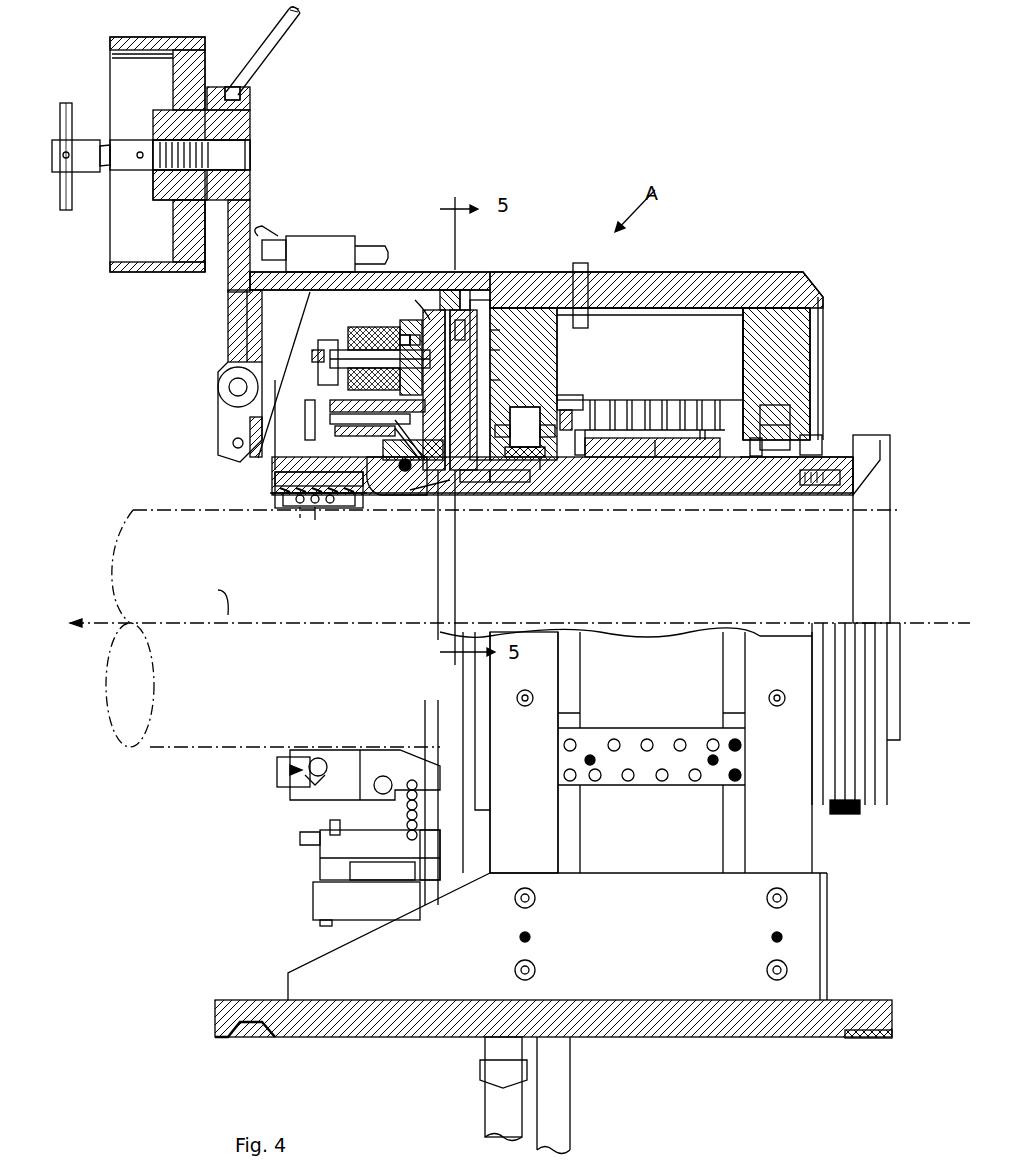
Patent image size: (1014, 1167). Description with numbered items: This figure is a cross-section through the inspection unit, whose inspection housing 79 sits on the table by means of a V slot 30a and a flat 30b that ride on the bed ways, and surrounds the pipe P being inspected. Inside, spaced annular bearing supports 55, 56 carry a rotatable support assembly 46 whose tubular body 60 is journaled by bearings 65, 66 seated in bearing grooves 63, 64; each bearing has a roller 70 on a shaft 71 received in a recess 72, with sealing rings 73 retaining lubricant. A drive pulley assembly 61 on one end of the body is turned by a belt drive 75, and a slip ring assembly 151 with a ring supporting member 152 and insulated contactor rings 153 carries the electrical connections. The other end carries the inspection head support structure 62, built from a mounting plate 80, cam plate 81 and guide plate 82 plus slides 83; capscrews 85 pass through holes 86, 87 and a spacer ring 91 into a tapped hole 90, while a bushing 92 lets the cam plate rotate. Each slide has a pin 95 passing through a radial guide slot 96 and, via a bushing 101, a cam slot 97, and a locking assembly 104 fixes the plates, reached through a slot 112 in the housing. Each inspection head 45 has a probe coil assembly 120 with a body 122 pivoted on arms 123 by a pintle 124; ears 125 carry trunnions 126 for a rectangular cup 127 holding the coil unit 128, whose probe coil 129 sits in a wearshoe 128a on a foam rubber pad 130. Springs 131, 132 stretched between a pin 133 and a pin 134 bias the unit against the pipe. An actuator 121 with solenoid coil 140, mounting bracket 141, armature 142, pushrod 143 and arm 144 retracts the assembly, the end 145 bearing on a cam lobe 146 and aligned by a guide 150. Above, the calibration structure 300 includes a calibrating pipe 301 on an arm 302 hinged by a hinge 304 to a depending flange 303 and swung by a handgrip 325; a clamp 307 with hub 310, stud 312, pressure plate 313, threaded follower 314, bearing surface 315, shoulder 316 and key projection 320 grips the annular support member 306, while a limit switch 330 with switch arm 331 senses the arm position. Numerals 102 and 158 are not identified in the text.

The calibration structure 300 is at (197, 146).
The calibrating pipe 301 is at (139, 36).
The arm 302 is at (250, 215).
The depending flange 303 is at (218, 418).
The hinge 304 is at (218, 385).
The annular support member 306 is at (190, 62).
The clamp 307 is at (100, 212).
The cylindrical hub 310 is at (245, 128).
The stud 312 is at (225, 152).
The annular pressure plate 313 is at (143, 138).
The threaded follower 314 is at (128, 142).
The annular bearing surface 315 is at (218, 88).
The shoulder 316 is at (240, 95).
The key projection 320 is at (178, 200).
The handgrip 325 is at (297, 10).
The limit switch 330 is at (335, 240).
The switch arm 331 is at (268, 232).
The housing 79 is at (665, 280).
The mounting plate 80 is at (478, 300).
The cam plate 81 is at (511, 360).
The guide plate 82 is at (450, 322).
The slides 83 is at (430, 490).
The capscrews 85 is at (482, 485).
The hole 86 is at (445, 495).
The hole 87 is at (462, 495).
The tapped hole 90 is at (505, 483).
The spacer ring 91 is at (440, 490).
The bushing 92 is at (408, 475).
The projecting pin 95 is at (395, 338).
The radial guide slot 96 is at (412, 336).
The cam slot 97 is at (511, 339).
The bushing 101 is at (523, 384).
The plate 102 is at (438, 770).
The locking assembly 104 is at (438, 292).
The slot 112 is at (464, 290).
The probe coil assembly 120 is at (298, 470).
The actuator 121 is at (306, 355).
The body 122 is at (320, 790).
The arms 123 is at (390, 445).
The pintle 124 is at (365, 505).
The ears 125 is at (320, 750).
The trunnions 126 is at (310, 758).
The rectangular cup 127 is at (276, 765).
The coil unit 128 is at (290, 508).
The wearshoe 128a is at (318, 520).
The probe coil 129 is at (298, 522).
The foam rubber pad 130 is at (276, 496).
The springs 131 is at (425, 790).
The spring 132 is at (308, 787).
The pin 133 is at (408, 775).
The pin 134 is at (420, 838).
The solenoid coil 140 is at (350, 328).
The mounting bracket 141 is at (318, 396).
The armature 142 is at (330, 360).
The pushrod 143 is at (347, 441).
The arm 144 is at (306, 418).
The end of the pushrod 145 is at (393, 868).
The cam lobe 146 is at (425, 865).
The guide 150 is at (340, 838).
The slip ring assembly 151 is at (620, 395).
The ring supporting member 152 is at (652, 495).
The contactor rings 153 is at (655, 425).
The pin 158 is at (703, 425).
The bearing support 55 is at (560, 368).
The bearing support 56 is at (745, 348).
The tubular body 60 is at (625, 495).
The drive pulley assembly 61 is at (855, 430).
The inspection head support structure 62 is at (425, 300).
The bearing groove 63 is at (540, 490).
The bearing groove 64 is at (760, 480).
The bearing 65 is at (548, 395).
The bearing 66 is at (768, 405).
The roller 70 is at (812, 432).
The shaft 71 is at (565, 400).
The recess 72 is at (530, 408).
The sealing rings 73 is at (548, 462).
The belt drive 75 is at (845, 815).
The rotatable support assembly 46 is at (725, 495).
The inspection head 45 is at (262, 468).
The V slot 30a is at (245, 1040).
The flat 30b is at (848, 1040).
The pipe P is at (520, 628).